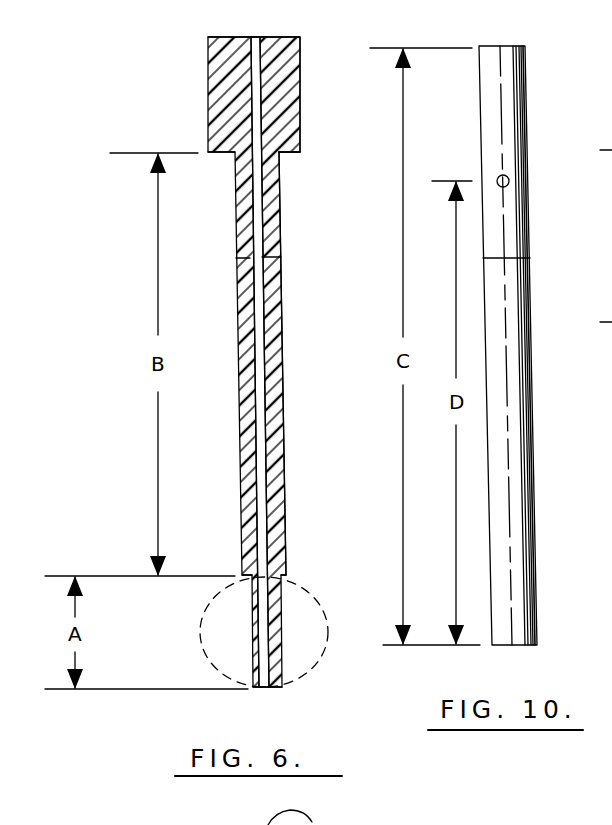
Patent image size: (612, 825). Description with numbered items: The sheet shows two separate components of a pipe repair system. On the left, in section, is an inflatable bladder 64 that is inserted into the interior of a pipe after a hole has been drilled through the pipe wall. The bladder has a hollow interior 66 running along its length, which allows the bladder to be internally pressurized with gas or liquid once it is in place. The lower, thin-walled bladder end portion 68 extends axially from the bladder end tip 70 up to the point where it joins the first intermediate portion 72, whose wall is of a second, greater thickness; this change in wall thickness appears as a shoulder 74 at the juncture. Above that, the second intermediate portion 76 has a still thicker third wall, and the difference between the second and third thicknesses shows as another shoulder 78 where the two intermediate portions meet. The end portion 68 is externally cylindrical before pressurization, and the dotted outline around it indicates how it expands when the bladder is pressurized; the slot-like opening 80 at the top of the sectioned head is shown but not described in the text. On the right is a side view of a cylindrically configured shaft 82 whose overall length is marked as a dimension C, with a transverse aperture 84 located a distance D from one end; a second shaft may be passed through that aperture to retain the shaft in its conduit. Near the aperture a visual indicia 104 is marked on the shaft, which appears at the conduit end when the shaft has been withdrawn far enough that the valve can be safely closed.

In FIG. 6, the inflatable bladder 64 is at (289, 323).
In FIG. 6, the hollow interior 66 is at (277, 416).
In FIG. 6, the bladder end portion 68 is at (277, 622).
In FIG. 6, the bladder end tip 70 is at (267, 688).
In FIG. 6, the first intermediate portion 72 is at (287, 499).
In FIG. 6, the shoulder 74 is at (287, 574).
In FIG. 6, the second intermediate portion 76 is at (291, 80).
In FIG. 6, the shoulder 78 is at (290, 153).
In FIG. 6, the slot 80 is at (253, 44).
In FIG. 10, the shaft 82 is at (508, 125).
In FIG. 10, the transverse aperture 84 is at (511, 179).
In FIG. 10, the visual indicia 104 is at (505, 258).